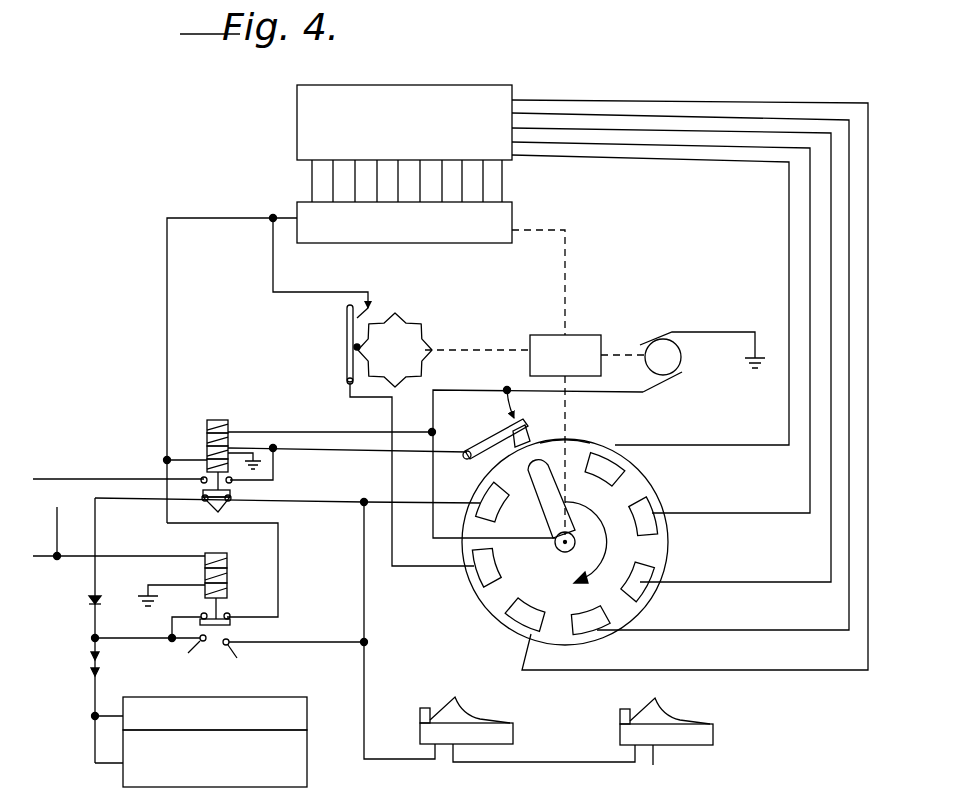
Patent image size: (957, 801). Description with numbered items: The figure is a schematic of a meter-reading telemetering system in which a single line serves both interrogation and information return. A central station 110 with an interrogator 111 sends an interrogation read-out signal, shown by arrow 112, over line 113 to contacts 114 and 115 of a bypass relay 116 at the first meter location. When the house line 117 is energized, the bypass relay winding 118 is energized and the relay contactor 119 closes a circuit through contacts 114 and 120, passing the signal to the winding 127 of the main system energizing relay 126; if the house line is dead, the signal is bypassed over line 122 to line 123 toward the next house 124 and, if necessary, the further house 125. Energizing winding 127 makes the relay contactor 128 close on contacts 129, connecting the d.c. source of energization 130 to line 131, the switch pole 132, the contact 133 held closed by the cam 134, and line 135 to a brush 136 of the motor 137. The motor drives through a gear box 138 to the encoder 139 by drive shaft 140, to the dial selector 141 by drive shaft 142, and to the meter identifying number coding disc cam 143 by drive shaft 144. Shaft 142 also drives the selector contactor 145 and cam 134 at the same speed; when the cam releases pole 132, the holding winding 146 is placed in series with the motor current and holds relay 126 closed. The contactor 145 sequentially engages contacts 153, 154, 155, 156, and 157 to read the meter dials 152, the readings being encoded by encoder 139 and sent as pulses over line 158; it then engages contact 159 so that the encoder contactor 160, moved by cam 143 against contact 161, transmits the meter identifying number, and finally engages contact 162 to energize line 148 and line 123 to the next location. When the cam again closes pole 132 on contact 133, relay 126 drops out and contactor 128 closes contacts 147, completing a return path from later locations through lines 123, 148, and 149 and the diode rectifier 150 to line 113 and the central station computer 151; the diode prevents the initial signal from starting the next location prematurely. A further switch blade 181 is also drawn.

The central station 110 is at (214, 728).
The interrogator 111 is at (296, 727).
The arrow 112 is at (92, 660).
The line 113 is at (92, 693).
The relay contact 114 is at (200, 614).
The relay contact 115 is at (149, 653).
The bypass relay 116 is at (265, 556).
The house line 117 is at (57, 508).
The bypass relay winding 118 is at (205, 575).
The relay contactor 119 is at (226, 626).
The relay contact 120 is at (230, 614).
The line 122 is at (296, 645).
The line 123 is at (364, 698).
The house 124 is at (470, 720).
The house 125 is at (670, 723).
The main system energizing relay 126 is at (230, 419).
The relay winding 127 is at (210, 452).
The relay contactor 128 is at (236, 497).
The relay contacts 129 is at (207, 470).
The source of energization 130 is at (66, 479).
The line 131 is at (274, 463).
The switch pole 132 is at (480, 440).
The contact 133 is at (518, 414).
The cam 134 is at (529, 433).
The line 135 is at (643, 392).
The brush 136 is at (676, 378).
The motor 137 is at (682, 355).
The gear box 138 is at (594, 329).
The encoder 139 is at (443, 239).
The drive shaft 140 is at (570, 263).
The dial selector 141 is at (482, 614).
The drive shaft 142 is at (583, 448).
The meter identifying number coding disc cam 143 is at (410, 334).
The drive shaft 144 is at (478, 350).
The selector contactor 145 is at (548, 506).
The holding winding 146 is at (210, 432).
The relay contacts 147 is at (219, 504).
The line 148 is at (364, 605).
The line 149 is at (95, 529).
The diode rectifier 150 is at (88, 599).
The central station computer 151 is at (296, 773).
The meter dials 152 is at (313, 142).
The contact 153 is at (628, 472).
The contact 154 is at (660, 515).
The contact 155 is at (652, 567).
The contact 156 is at (601, 630).
The contact 157 is at (520, 627).
The line 158 is at (167, 290).
The contact 159 is at (470, 577).
The meter identifying number encoder contactor 160 is at (347, 350).
The contact 161 is at (347, 306).
The contact 162 is at (483, 497).
The switch blade 181 is at (240, 653).